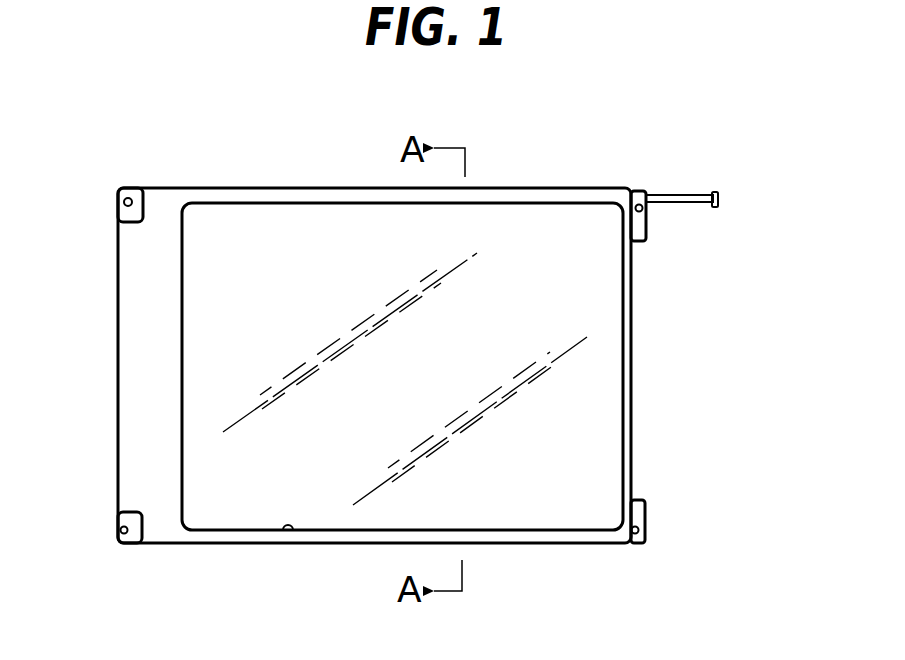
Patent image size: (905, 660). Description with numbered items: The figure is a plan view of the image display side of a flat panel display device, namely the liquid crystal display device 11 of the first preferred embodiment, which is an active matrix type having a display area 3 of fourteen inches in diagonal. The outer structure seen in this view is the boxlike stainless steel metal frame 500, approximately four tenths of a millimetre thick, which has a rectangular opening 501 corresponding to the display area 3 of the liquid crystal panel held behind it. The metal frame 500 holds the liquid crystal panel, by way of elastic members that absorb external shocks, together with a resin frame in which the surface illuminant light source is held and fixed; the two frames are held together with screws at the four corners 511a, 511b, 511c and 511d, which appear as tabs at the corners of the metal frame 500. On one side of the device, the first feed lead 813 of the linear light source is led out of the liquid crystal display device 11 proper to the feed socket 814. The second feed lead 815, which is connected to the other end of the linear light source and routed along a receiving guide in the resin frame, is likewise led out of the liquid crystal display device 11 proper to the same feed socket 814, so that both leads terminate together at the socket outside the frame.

The liquid crystal display device 11 is at (405, 359).
The display area 3 is at (588, 373).
The metal frame 500 is at (168, 535).
The rectangular opening 501 is at (288, 533).
The corner 511a is at (124, 541).
The corner 511b is at (137, 197).
The corner 511c is at (640, 197).
The corner 511d is at (640, 523).
The first feed lead 813 is at (698, 203).
The feed socket 814 is at (718, 200).
The second feed lead 815 is at (688, 195).